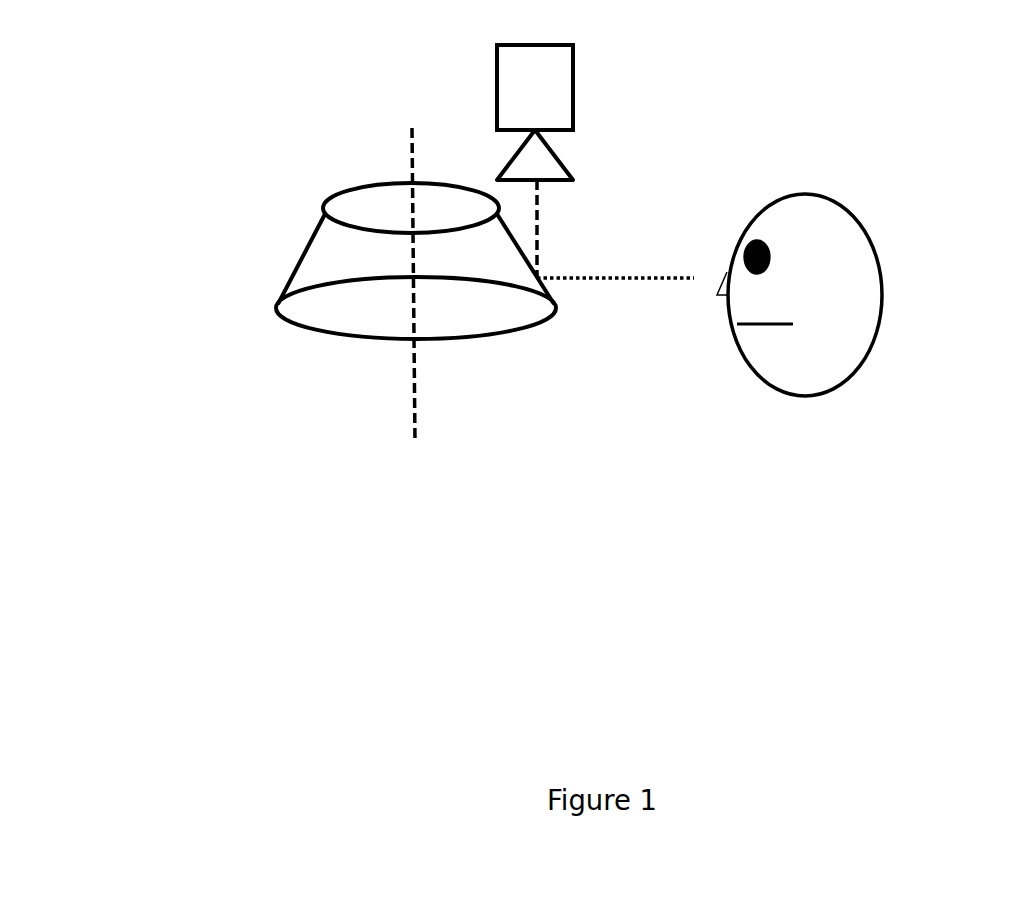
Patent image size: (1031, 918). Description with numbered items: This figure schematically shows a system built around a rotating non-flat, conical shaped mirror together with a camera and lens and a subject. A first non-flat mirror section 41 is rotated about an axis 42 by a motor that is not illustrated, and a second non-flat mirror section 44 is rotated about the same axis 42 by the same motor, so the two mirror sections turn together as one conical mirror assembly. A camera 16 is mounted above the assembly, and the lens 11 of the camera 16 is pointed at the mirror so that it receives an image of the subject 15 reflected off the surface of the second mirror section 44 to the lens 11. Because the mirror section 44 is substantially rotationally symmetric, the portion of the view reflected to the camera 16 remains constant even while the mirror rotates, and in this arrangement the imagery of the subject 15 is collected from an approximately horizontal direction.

The camera 16 is at (575, 58).
The lens 11 is at (557, 155).
The first non-flat mirror section 41 is at (298, 252).
The axis 42 is at (407, 150).
The second non-flat mirror section 44 is at (463, 338).
The subject 15 is at (880, 258).